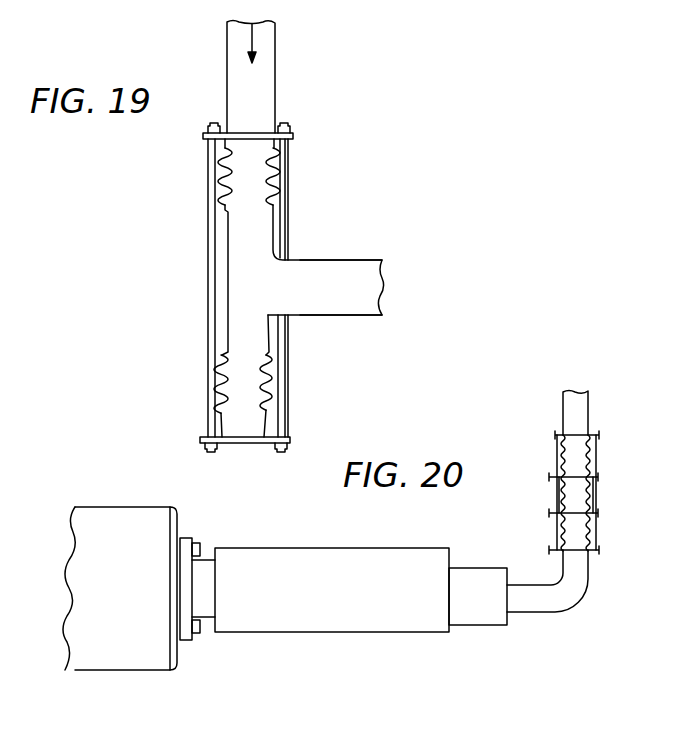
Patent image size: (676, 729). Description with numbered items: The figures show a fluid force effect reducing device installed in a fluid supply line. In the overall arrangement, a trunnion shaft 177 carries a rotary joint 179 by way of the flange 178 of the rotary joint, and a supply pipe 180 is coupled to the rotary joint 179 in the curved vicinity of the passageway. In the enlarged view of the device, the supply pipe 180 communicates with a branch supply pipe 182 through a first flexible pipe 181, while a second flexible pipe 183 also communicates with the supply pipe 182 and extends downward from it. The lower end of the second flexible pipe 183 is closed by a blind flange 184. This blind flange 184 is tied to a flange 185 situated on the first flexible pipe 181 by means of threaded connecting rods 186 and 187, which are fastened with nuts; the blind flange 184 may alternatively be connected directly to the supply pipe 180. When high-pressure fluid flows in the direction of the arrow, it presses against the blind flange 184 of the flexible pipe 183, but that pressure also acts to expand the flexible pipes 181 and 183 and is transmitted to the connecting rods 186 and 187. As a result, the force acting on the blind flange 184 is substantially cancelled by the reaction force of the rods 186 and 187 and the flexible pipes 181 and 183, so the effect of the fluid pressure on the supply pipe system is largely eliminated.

In FIG. 20, the trunnion shaft 177 is at (118, 508).
In FIG. 20, the flange of a rotary joint 178 is at (186, 538).
In FIG. 20, the rotary joint 179 is at (473, 627).
In FIG. 19, the supply pipe 180 is at (277, 47).
In FIG. 20, the supply pipe 180 is at (568, 410).
In FIG. 19, the first flexible pipe 181 is at (282, 190).
In FIG. 19, the supply pipe 182 is at (335, 317).
In FIG. 19, the second flexible pipe 183 is at (282, 407).
In FIG. 19, the blind flange 184 is at (243, 445).
In FIG. 19, the flange 185 is at (293, 135).
In FIG. 19, the threaded connecting rod 186 is at (287, 234).
In FIG. 19, the threaded connecting rod 187 is at (207, 278).